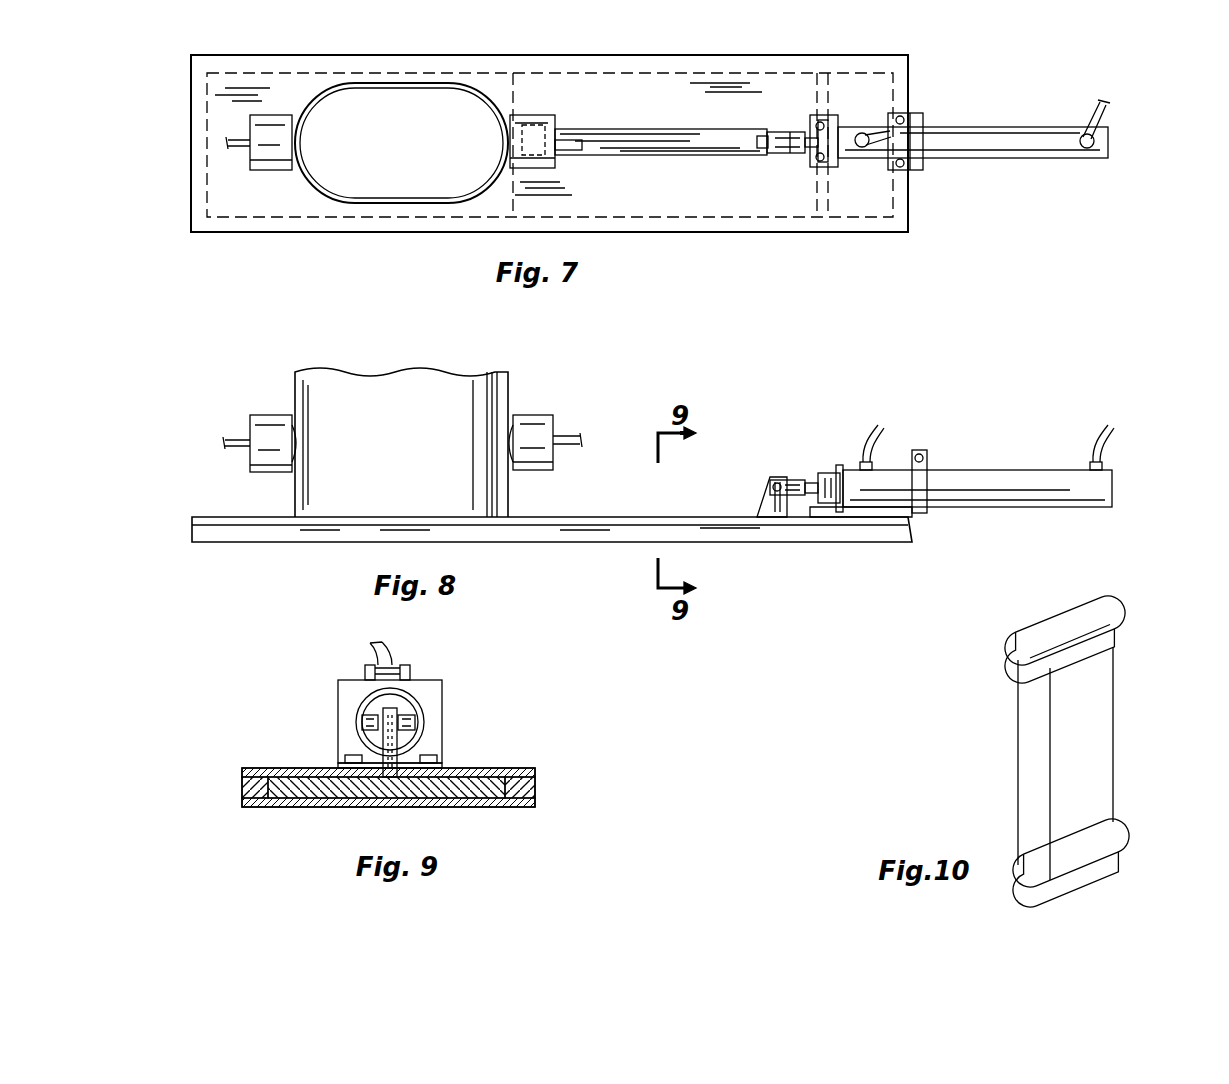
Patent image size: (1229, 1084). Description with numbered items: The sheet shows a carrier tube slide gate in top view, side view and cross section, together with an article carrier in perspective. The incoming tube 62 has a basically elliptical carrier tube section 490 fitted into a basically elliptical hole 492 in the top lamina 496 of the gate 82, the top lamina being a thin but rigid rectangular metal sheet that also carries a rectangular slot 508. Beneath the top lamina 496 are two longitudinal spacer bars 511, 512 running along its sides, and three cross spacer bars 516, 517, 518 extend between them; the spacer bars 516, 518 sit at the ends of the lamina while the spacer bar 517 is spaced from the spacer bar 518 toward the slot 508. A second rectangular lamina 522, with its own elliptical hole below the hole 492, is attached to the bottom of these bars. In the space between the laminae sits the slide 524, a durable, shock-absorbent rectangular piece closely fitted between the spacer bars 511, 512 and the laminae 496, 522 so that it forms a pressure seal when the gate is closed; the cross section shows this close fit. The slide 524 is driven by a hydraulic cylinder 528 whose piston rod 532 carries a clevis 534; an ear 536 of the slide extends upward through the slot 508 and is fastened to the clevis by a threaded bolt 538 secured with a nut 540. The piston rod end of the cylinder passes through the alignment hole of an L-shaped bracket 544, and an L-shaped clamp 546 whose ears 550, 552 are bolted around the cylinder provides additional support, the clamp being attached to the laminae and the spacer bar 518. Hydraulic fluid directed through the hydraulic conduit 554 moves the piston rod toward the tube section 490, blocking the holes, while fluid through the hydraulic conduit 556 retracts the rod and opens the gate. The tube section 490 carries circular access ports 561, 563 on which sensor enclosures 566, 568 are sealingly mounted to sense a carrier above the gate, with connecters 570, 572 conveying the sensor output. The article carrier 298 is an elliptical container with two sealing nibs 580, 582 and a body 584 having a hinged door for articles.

In FIG. 7, the incoming tube 62 is at (378, 205).
In FIG. 8, the incoming tube 62 is at (395, 388).
In FIG. 7, the gate 82 is at (277, 233).
In FIG. 8, the gate 82 is at (318, 530).
In FIG. 10, the article carrier 298 is at (1118, 707).
In FIG. 7, the carrier tube section 490 is at (428, 86).
In FIG. 8, the carrier tube section 490 is at (518, 386).
In FIG. 7, the elliptical hole 492 is at (380, 86).
In FIG. 7, the top lamina 496 is at (645, 95).
In FIG. 8, the top lamina 496 is at (225, 516).
In FIG. 9, the top lamina 496 is at (312, 768).
In FIG. 7, the rectangular slot 508 is at (715, 128).
In FIG. 9, the rectangular slot 508 is at (380, 800).
In FIG. 7, the spacer bar 511 is at (687, 218).
In FIG. 8, the spacer bar 511 is at (252, 530).
In FIG. 9, the spacer bar 511 is at (536, 791).
In FIG. 7, the spacer bar 512 is at (815, 62).
In FIG. 9, the spacer bar 512 is at (242, 791).
In FIG. 7, the cross spacer bar 516 is at (191, 183).
In FIG. 8, the cross spacer bar 516 is at (191, 525).
In FIG. 7, the cross spacer bar 517 is at (832, 205).
In FIG. 8, the cross spacer bar 517 is at (822, 535).
In FIG. 7, the cross spacer bar 518 is at (905, 192).
In FIG. 8, the cross spacer bar 518 is at (908, 532).
In FIG. 8, the second rectangular lamina 522 is at (512, 532).
In FIG. 9, the second rectangular lamina 522 is at (288, 808).
In FIG. 7, the slide 524 is at (582, 138).
In FIG. 9, the slide 524 is at (430, 808).
In FIG. 7, the hydraulic cylinder 528 is at (1022, 128).
In FIG. 8, the hydraulic cylinder 528 is at (1018, 470).
In FIG. 9, the hydraulic cylinder 528 is at (403, 708).
In FIG. 7, the piston rod 532 is at (822, 120).
In FIG. 8, the piston rod 532 is at (812, 480).
In FIG. 7, the clevis 534 is at (795, 155).
In FIG. 8, the clevis 534 is at (798, 480).
In FIG. 9, the clevis 534 is at (418, 722).
In FIG. 7, the ear 536 is at (765, 135).
In FIG. 8, the ear 536 is at (768, 506).
In FIG. 9, the ear 536 is at (358, 743).
In FIG. 9, the threaded bolt 538 is at (415, 729).
In FIG. 9, the nut 540 is at (363, 718).
In FIG. 8, the L-shaped bracket 544 is at (840, 466).
In FIG. 8, the L-shaped clamp 546 is at (930, 472).
In FIG. 7, the clamp ear 550 is at (925, 162).
In FIG. 7, the clamp ear 552 is at (922, 118).
In FIG. 7, the hydraulic conduit 554 is at (1095, 128).
In FIG. 8, the hydraulic conduit 554 is at (1096, 430).
In FIG. 7, the hydraulic conduit 556 is at (866, 135).
In FIG. 8, the hydraulic conduit 556 is at (875, 441).
In FIG. 8, the access port 561 is at (300, 396).
In FIG. 8, the access port 563 is at (517, 418).
In FIG. 8, the sensor enclosure 566 is at (257, 430).
In FIG. 8, the sensor enclosure 568 is at (545, 441).
In FIG. 8, the connecter 570 is at (245, 446).
In FIG. 8, the connecter 572 is at (562, 440).
In FIG. 10, the elliptical nib 580 is at (1105, 856).
In FIG. 10, the elliptical nib 582 is at (1110, 621).
In FIG. 10, the body 584 is at (1072, 707).